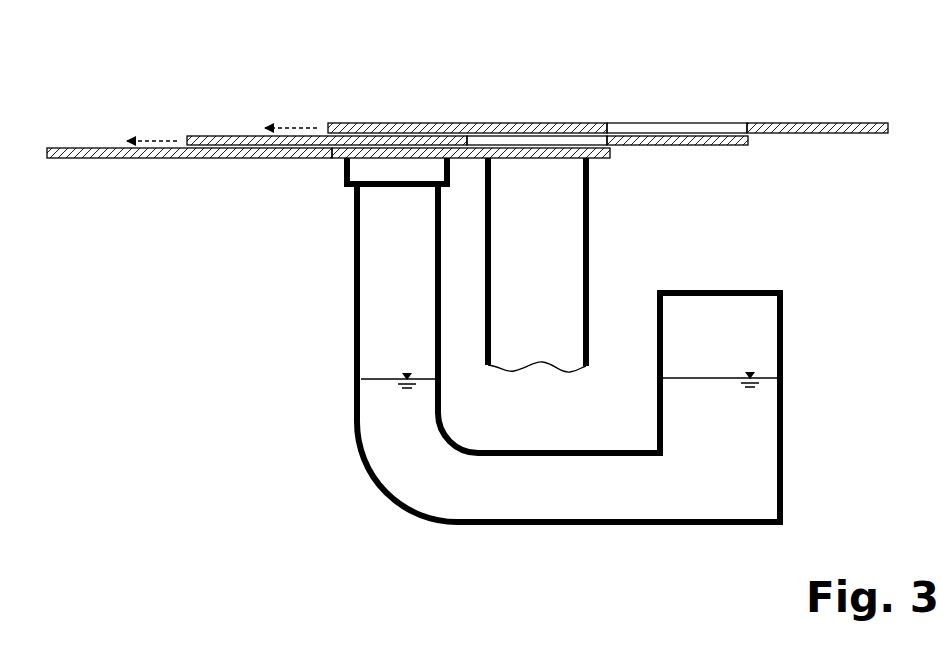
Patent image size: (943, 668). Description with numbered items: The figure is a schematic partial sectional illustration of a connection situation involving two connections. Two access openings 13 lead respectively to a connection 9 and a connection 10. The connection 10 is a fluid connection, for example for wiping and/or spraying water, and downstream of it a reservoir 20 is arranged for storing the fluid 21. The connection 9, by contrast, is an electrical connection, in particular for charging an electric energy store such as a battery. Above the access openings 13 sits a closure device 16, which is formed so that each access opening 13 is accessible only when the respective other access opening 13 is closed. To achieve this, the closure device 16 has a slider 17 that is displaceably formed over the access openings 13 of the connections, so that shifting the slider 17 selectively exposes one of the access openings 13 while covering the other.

The connection 9 is at (590, 213).
The connection 10 is at (354, 270).
The access opening 13 is at (397, 216).
The closure device 16 is at (655, 100).
The slider 17 is at (718, 146).
The reservoir 20 is at (785, 337).
The fluid 21 is at (755, 443).